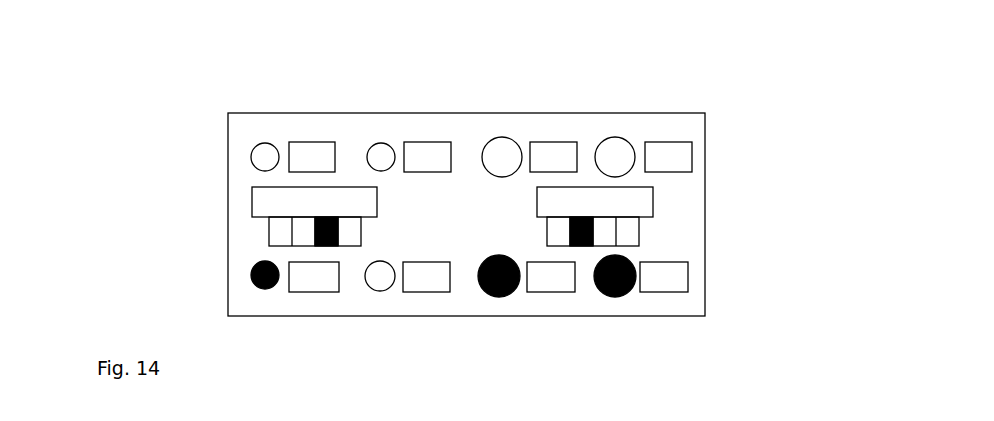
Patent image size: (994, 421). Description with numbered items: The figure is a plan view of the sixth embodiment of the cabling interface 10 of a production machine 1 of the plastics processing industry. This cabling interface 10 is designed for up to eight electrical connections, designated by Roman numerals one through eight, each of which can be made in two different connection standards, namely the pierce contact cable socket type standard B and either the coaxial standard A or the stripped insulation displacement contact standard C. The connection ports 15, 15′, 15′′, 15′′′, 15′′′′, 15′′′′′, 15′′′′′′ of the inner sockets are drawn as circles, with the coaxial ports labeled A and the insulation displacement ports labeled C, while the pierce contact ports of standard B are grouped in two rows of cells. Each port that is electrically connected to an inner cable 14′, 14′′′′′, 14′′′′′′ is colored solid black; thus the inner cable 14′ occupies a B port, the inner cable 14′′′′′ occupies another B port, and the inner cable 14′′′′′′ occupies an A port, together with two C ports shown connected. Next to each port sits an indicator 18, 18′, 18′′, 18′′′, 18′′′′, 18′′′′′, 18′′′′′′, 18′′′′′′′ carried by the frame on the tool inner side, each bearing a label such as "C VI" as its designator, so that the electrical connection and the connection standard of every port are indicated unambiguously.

The production machine 1 is at (762, 120).
The cabling interface 10 is at (466, 214).
The inner cable 14′ is at (595, 237).
The inner cable 14′′′′′ is at (315, 232).
The inner cable 14′′′′′′ is at (264, 274).
The connection port of inner socket 15 is at (264, 157).
The connection port of inner socket 15′ is at (381, 156).
The connection port of inner socket 15′′ is at (502, 156).
The connection port of inner socket 15′′′ is at (615, 156).
The connection port of inner socket 15′′′′ is at (615, 297).
The connection port of inner socket 15′′′′′ is at (497, 297).
The connection port of inner socket 15′′′′′′ is at (380, 283).
The indicator 18 is at (315, 146).
The indicator 18′ is at (431, 146).
The indicator 18′′ is at (556, 146).
The indicator 18′′′ is at (668, 146).
The indicator 18′′′′ is at (377, 210).
The indicator 18′′′′′ is at (549, 292).
The indicator 18′′′′′′ is at (423, 292).
The indicator 18′′′′′′′ is at (313, 292).